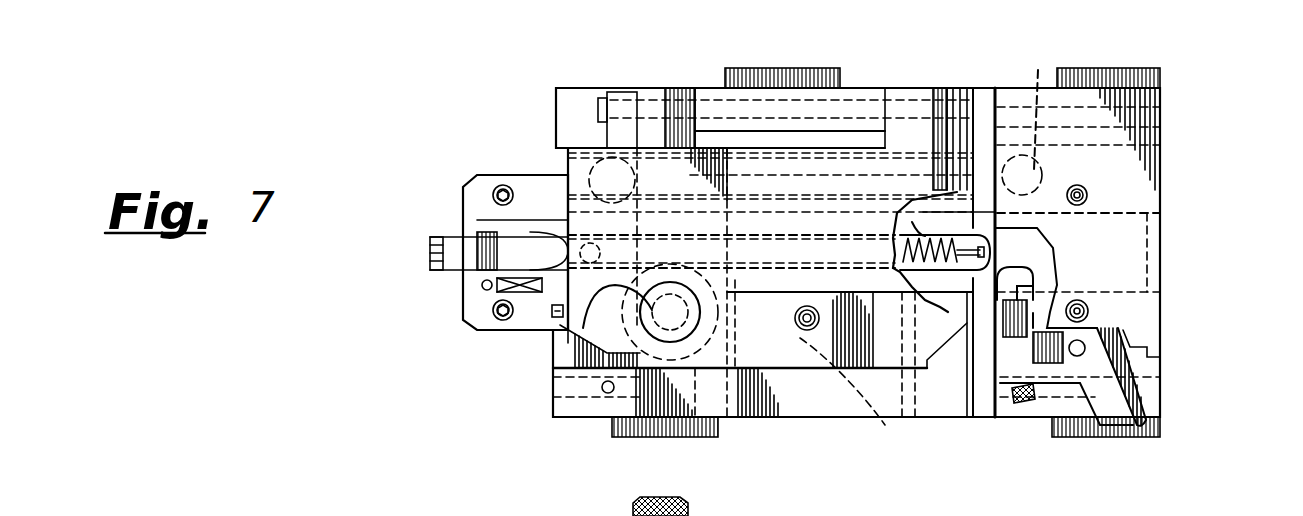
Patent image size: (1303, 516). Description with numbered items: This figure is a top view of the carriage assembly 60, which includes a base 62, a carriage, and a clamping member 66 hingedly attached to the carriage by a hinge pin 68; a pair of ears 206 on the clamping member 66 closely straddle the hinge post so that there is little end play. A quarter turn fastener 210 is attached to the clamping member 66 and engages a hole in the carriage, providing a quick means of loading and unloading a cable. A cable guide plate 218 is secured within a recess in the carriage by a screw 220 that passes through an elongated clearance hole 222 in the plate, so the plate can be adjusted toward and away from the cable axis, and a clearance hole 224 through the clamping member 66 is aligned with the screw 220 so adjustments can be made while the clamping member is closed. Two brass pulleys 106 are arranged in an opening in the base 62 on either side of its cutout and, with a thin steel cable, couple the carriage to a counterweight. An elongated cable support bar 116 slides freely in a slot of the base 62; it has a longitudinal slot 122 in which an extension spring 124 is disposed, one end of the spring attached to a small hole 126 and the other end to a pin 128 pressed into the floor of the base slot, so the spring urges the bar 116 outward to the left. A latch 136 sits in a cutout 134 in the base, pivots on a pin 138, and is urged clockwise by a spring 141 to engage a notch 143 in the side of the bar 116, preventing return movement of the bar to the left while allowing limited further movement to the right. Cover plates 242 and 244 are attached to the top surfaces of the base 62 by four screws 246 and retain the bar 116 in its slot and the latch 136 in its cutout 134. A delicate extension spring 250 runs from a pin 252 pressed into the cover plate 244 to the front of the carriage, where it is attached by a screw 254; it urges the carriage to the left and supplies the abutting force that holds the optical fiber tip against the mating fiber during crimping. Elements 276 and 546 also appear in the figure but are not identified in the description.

The carriage assembly 60 is at (495, 386).
The base 62 is at (540, 103).
The clamping member 66 is at (568, 175).
The hinge pin 68 is at (597, 108).
The brass pulley 106 is at (648, 213).
The cable support bar 116 is at (1030, 262).
The slot 122 is at (905, 214).
The extension spring 124 is at (944, 262).
The small hole 126 is at (1080, 232).
The pin 128 is at (587, 250).
The cutout 134 is at (1127, 363).
The latch 136 is at (1120, 425).
The pin 138 is at (1085, 346).
The spring 141 is at (1022, 407).
The notch 143 is at (1040, 275).
The ears 206 is at (620, 92).
The quarter turn fastener 210 is at (584, 323).
The cable guide plate 218 is at (835, 400).
The screw 220 is at (793, 314).
The arcuate slot 222 is at (883, 427).
The clearance hole 224 is at (798, 328).
The cover plate 242 is at (1137, 167).
The cover plate 244 is at (483, 174).
The screws 246 is at (1080, 192).
The extension spring 250 is at (547, 310).
The pin 252 is at (482, 285).
The screw 254 is at (560, 325).
The screw 276 is at (495, 195).
The screw 546 is at (495, 310).